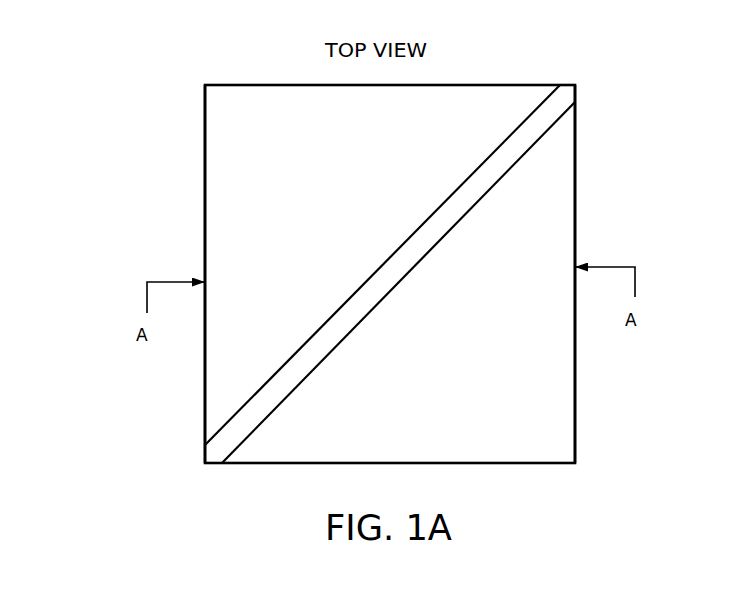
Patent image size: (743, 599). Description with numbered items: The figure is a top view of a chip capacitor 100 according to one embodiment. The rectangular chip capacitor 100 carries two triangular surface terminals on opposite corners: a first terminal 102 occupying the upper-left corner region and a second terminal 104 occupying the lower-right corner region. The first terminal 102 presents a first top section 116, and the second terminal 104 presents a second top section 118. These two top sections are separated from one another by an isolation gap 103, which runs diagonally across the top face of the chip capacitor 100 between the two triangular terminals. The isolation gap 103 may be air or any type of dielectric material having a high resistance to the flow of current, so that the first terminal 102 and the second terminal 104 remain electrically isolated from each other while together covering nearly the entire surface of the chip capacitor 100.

The chip capacitor 100 is at (622, 100).
The first terminal 102 is at (205, 160).
The isolation gap 103 is at (503, 162).
The second terminal 104 is at (575, 388).
The first top section 116 is at (297, 226).
The second top section 118 is at (488, 330).